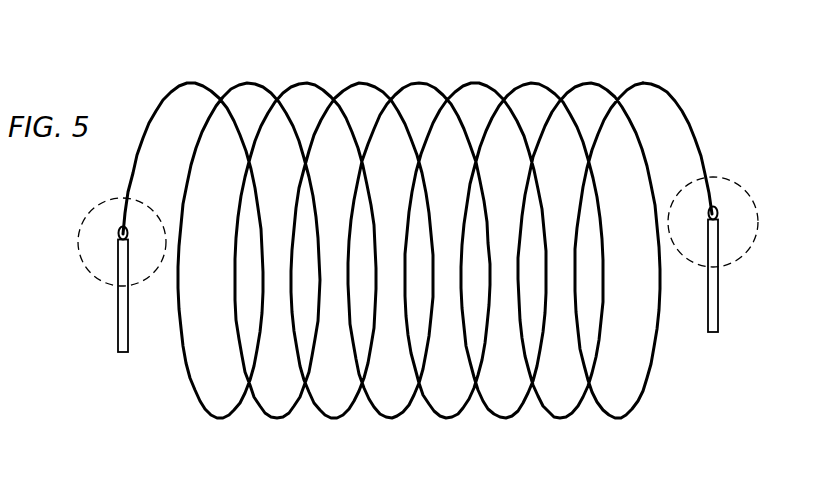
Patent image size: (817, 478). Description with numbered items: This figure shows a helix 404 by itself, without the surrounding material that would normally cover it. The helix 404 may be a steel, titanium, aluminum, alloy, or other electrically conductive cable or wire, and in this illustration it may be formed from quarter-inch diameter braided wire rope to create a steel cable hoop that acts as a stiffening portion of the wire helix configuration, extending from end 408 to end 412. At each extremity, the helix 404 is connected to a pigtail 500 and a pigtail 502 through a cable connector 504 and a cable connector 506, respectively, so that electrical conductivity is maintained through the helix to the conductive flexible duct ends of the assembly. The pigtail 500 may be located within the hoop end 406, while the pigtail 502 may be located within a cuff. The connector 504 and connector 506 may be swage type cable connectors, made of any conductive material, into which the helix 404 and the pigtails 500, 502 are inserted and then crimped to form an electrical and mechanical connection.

The helix 404 is at (418, 83).
The hoop end 406 is at (683, 112).
The end 408 is at (713, 355).
The end 412 is at (122, 368).
The pigtail 500 is at (118, 314).
The pigtail 502 is at (718, 295).
The cable connector 504 is at (119, 232).
The cable connector 506 is at (718, 215).